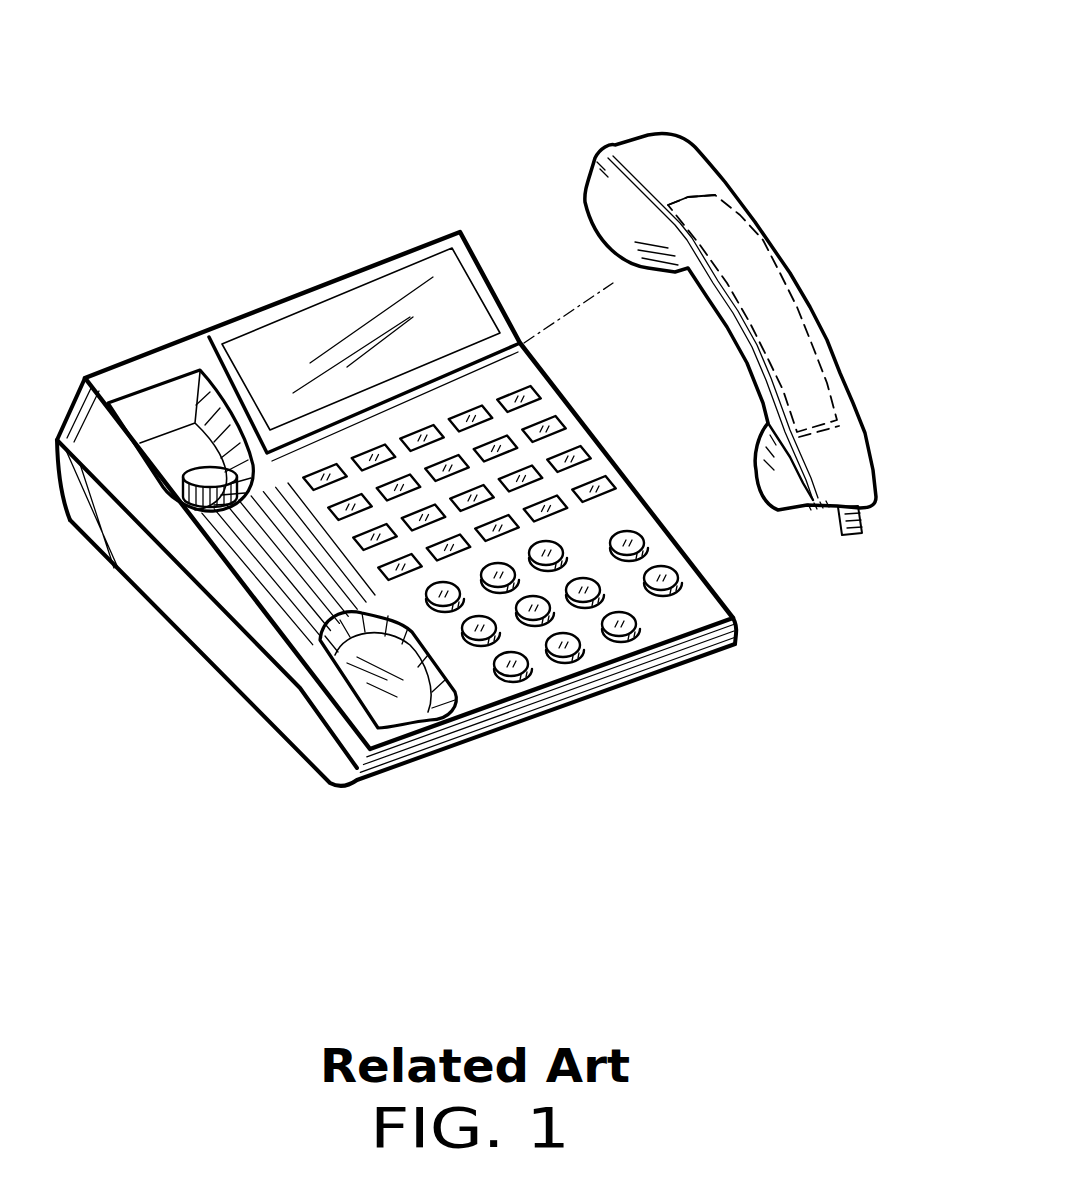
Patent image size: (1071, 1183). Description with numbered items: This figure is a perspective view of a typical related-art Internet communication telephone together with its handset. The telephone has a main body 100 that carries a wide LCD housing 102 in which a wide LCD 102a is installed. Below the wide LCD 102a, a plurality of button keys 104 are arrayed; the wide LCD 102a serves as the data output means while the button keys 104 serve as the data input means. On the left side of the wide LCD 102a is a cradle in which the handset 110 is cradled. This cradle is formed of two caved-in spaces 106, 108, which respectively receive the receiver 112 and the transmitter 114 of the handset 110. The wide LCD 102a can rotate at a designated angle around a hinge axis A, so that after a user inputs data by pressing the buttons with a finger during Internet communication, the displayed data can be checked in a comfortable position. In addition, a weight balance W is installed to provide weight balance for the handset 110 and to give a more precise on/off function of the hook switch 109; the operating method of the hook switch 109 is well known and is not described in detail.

The main body 100 is at (553, 727).
The wide LCD housing 102 is at (352, 262).
The wide LCD 102a is at (298, 342).
The button keys 104 is at (575, 450).
The caved-in space 106 is at (177, 452).
The caved-in space 108 is at (385, 660).
The hook switch 109 is at (123, 457).
The handset 110 is at (693, 196).
The receiver 112 is at (618, 222).
The transmitter 114 is at (780, 490).
The weight balance W is at (767, 257).
The hinge axis A is at (600, 290).